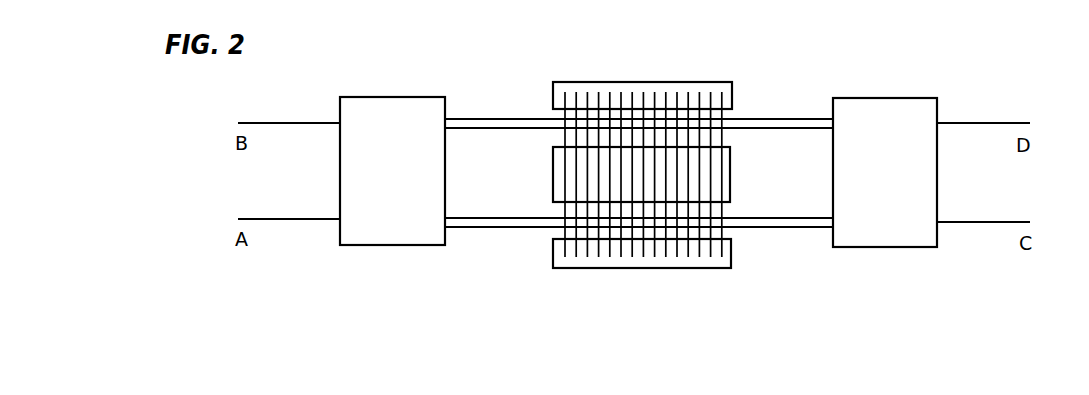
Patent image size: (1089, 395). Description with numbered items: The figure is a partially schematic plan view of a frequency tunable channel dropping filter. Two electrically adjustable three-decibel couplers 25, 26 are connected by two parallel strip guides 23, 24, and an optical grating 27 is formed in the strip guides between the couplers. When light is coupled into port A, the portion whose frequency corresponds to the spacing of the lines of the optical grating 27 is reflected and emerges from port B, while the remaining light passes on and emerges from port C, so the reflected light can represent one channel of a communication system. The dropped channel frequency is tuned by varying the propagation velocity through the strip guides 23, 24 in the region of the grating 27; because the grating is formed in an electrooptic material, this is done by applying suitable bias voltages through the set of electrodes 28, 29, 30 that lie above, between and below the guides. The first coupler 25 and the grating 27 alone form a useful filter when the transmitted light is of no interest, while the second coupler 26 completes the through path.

The strip guide 23 is at (497, 228).
The strip guide 24 is at (490, 119).
The 3 dB coupler 25 is at (384, 101).
The 3 dB coupler 26 is at (884, 106).
The optical grating 27 is at (722, 233).
The electrode 28 is at (614, 263).
The electrode 29 is at (727, 178).
The electrode 30 is at (732, 92).